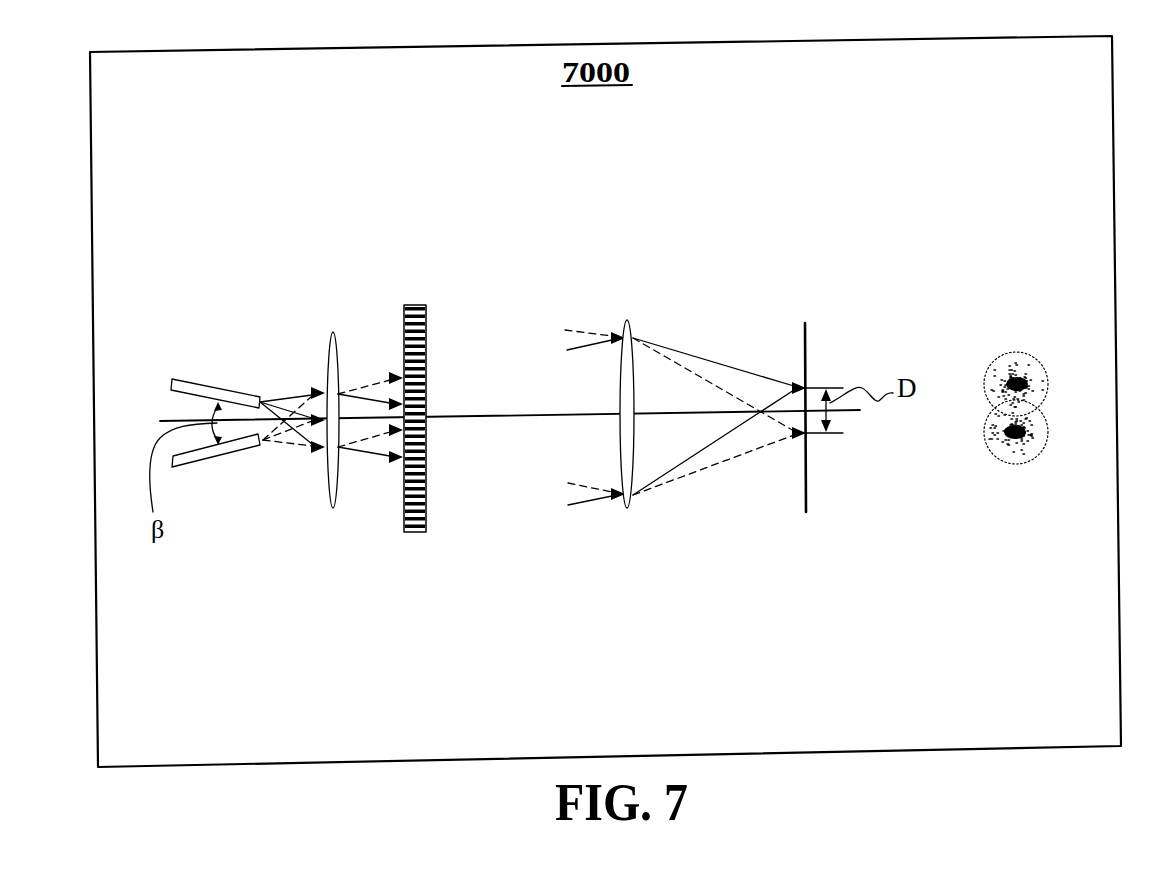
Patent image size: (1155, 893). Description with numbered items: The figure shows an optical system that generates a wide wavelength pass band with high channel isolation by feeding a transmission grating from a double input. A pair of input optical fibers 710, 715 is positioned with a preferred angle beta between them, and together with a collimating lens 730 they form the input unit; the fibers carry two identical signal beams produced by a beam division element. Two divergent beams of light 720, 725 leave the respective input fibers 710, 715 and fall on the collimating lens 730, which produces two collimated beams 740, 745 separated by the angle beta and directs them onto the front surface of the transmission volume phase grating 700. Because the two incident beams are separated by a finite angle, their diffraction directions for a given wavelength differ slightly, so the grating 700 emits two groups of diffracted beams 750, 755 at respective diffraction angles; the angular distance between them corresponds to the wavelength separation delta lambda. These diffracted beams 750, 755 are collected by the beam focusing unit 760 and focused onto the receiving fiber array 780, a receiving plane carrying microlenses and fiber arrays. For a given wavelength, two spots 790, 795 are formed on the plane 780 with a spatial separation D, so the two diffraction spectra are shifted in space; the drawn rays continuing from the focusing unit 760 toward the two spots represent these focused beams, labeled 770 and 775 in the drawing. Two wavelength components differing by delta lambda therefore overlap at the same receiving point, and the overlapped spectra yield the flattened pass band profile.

The transmission volume phase grating 700 is at (425, 317).
The input optical fiber 710 is at (200, 386).
The input optical fiber 715 is at (212, 452).
The divergent beam of light 720 is at (283, 402).
The divergent beam of light 725 is at (287, 440).
The collimating lens 730 is at (337, 333).
The collimated beam 740 is at (370, 453).
The collimated beam 745 is at (377, 380).
The diffracted beam 750 is at (587, 500).
The diffracted beam 755 is at (580, 327).
The beam focusing unit 760 is at (627, 320).
The first focused beam 770 is at (720, 363).
The second focused beam 775 is at (725, 460).
The receiving fiber array 780 is at (806, 323).
The spot 790 is at (810, 384).
The spot 795 is at (808, 440).